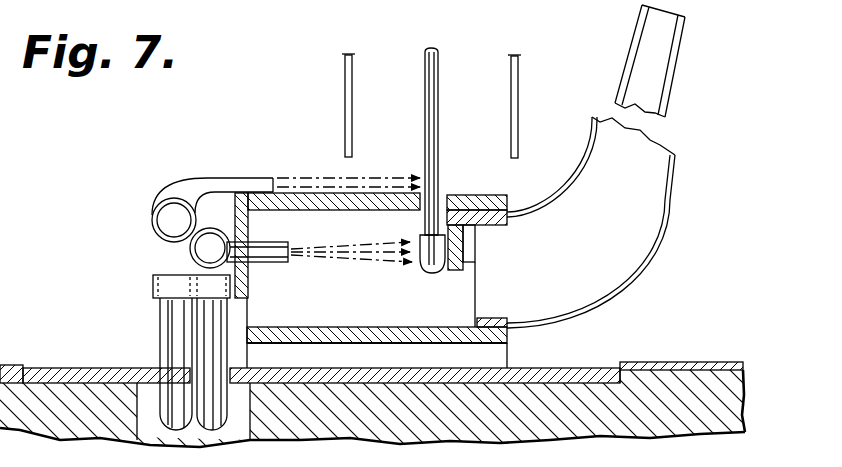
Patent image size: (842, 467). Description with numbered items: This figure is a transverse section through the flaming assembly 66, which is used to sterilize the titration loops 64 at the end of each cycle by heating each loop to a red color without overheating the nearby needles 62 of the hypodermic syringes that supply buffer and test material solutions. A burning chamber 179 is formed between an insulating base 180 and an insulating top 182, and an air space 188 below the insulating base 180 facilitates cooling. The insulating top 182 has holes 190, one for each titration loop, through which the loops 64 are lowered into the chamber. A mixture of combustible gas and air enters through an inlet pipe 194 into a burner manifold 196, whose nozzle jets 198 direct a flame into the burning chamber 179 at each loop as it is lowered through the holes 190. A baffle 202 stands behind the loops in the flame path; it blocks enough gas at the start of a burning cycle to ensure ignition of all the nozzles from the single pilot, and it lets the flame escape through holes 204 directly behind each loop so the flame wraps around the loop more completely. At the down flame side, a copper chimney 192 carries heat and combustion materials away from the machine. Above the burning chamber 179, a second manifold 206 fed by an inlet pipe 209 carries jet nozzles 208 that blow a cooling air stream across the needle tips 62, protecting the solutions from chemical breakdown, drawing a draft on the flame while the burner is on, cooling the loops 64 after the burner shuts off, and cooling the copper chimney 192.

The needles 62 is at (350, 102).
The titration loops 64 is at (440, 97).
The flaming assembly 66 is at (103, 207).
The burning chamber 179 is at (392, 304).
The insulating base 180 is at (281, 327).
The insulating top 182 is at (300, 187).
The air space 188 is at (490, 352).
The holes 190 is at (443, 195).
The copper chimney 192 is at (653, 160).
The inlet pipe 194 is at (200, 316).
The burner manifold 196 is at (195, 255).
The nozzle jets 198 is at (277, 239).
The baffle 202 is at (477, 230).
The holes 204 is at (477, 255).
The second manifold 206 is at (176, 198).
The jet nozzles 208 is at (219, 178).
The inlet pipe 209 is at (170, 348).